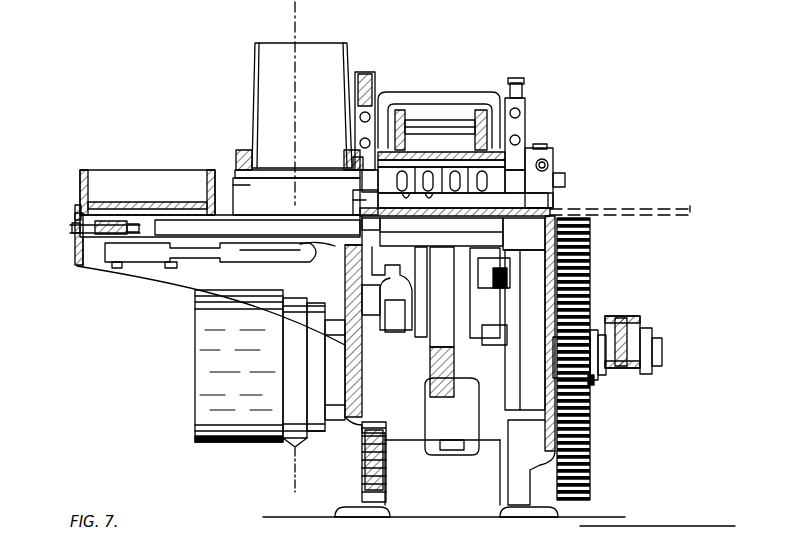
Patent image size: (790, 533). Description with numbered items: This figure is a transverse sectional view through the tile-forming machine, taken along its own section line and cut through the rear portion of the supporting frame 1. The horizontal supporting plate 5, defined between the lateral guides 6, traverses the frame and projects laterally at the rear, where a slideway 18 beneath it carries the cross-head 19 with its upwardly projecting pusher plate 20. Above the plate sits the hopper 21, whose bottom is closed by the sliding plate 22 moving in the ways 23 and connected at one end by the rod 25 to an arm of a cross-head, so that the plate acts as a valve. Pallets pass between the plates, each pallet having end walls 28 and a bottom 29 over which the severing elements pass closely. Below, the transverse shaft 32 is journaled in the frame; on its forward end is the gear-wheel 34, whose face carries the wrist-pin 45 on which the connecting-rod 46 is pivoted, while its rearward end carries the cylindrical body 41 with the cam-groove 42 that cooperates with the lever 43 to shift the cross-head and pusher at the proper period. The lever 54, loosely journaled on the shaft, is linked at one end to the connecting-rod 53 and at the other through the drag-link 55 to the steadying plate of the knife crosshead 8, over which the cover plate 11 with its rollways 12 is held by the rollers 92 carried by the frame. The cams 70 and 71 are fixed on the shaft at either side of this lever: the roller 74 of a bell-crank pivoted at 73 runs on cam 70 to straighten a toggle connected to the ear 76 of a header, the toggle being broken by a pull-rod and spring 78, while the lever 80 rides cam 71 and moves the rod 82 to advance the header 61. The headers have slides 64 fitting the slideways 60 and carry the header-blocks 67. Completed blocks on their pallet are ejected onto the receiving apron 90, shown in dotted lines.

The supporting frame 1 is at (528, 292).
The horizontal supporting plate 5 is at (240, 214).
The lateral guides 6 is at (360, 201).
The crosshead 8 is at (316, 12).
The cover plate 11 is at (437, 143).
The rollways 12 is at (392, 148).
The slideway 18 is at (262, 222).
The cross-head 19 is at (107, 240).
The pusher plate 20 is at (78, 212).
The hopper 21 is at (259, 93).
The sliding plate 22 is at (300, 170).
The ways 23 is at (238, 158).
The rod 25 is at (342, 248).
The end walls 28 is at (94, 180).
The bottom 29 is at (160, 198).
The shaft 32 is at (592, 384).
The gear-wheel 34 is at (590, 478).
The cylindrical body 41 is at (200, 380).
The cam-groove 42 is at (284, 344).
The lever 43 is at (225, 255).
The wrist-pin 45 is at (655, 346).
The connecting-rod 46 is at (632, 317).
The connecting-rod 53 is at (452, 351).
The lever 54 is at (452, 296).
The drag-link 55 is at (470, 272).
The slideways 60 is at (522, 190).
The header 61 is at (482, 330).
The slides 64 is at (520, 178).
The header-blocks 67 is at (406, 209).
The cam 70 is at (380, 357).
The cam 71 is at (510, 348).
The pivot 73 is at (412, 286).
The roller 74 is at (378, 298).
The ear 76 is at (441, 239).
The spring 78 is at (362, 437).
The lever 80 is at (522, 320).
The rod 82 is at (525, 264).
The receiving apron 90 is at (622, 205).
The rollers 92 is at (472, 110).